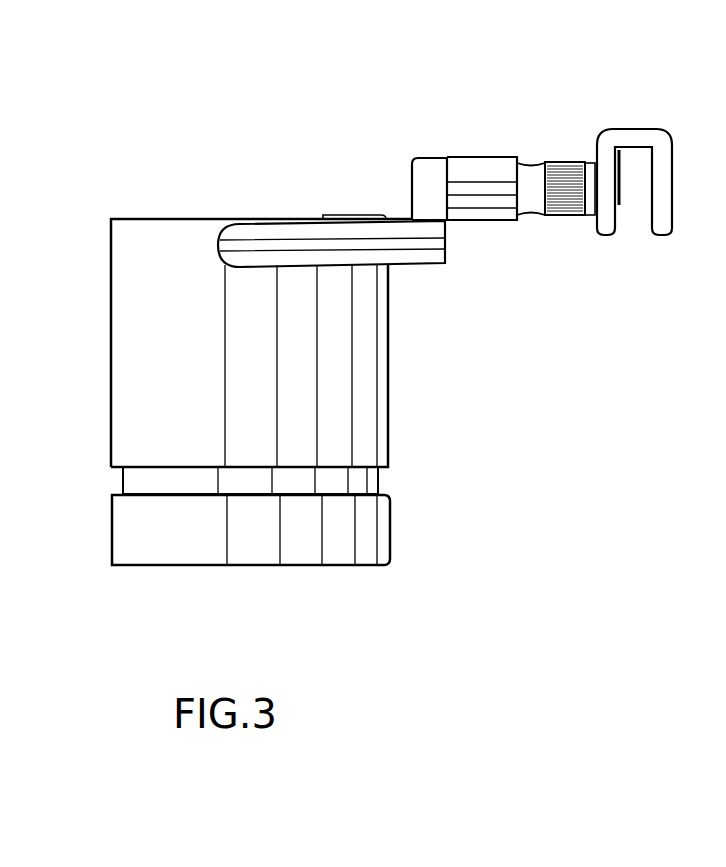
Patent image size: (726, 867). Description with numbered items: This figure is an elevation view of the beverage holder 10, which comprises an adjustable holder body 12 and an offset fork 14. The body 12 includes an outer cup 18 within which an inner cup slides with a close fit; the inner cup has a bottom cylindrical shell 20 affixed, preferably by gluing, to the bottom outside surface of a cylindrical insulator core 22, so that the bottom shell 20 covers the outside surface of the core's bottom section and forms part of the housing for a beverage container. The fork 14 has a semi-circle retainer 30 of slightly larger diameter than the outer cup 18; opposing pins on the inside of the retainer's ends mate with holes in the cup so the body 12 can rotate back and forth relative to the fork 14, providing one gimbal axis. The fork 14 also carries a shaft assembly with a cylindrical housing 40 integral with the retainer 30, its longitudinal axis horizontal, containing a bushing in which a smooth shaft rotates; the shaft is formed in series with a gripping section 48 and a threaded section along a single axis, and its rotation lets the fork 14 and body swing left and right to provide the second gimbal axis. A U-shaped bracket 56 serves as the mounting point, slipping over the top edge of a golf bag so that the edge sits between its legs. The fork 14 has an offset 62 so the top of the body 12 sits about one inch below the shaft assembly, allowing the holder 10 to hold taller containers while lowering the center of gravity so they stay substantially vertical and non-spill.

The beverage holder 10 is at (196, 92).
The adjustable holder body 12 is at (398, 413).
The offset fork 14 is at (450, 150).
The outer cup 18 is at (142, 308).
The bottom cylindrical shell 20 is at (390, 525).
The cylindrical insulator core 22 is at (122, 478).
The semi-circle retainer 30 is at (447, 243).
The cylindrical housing 40 is at (472, 157).
The gripping section 48 is at (565, 215).
The U-shaped bracket 56 is at (655, 130).
The offset 62 is at (410, 202).